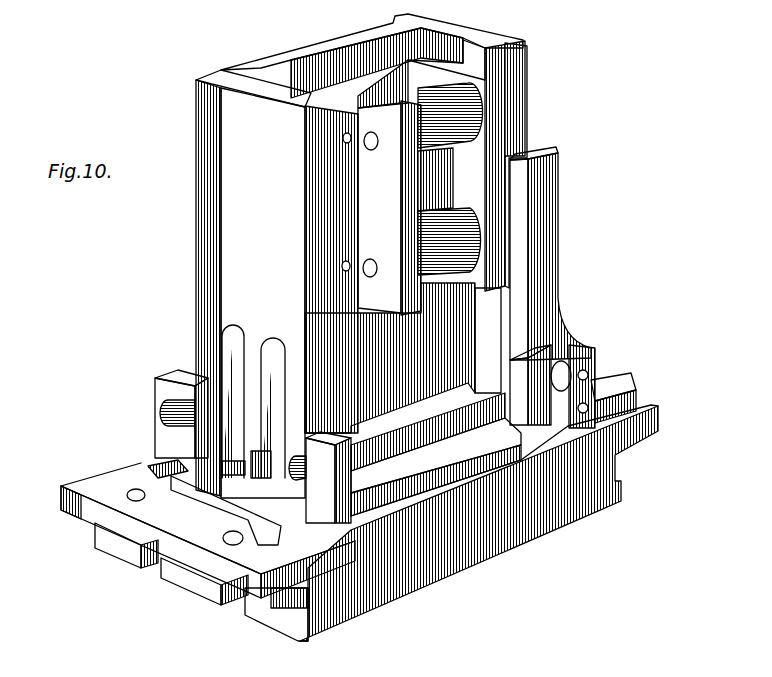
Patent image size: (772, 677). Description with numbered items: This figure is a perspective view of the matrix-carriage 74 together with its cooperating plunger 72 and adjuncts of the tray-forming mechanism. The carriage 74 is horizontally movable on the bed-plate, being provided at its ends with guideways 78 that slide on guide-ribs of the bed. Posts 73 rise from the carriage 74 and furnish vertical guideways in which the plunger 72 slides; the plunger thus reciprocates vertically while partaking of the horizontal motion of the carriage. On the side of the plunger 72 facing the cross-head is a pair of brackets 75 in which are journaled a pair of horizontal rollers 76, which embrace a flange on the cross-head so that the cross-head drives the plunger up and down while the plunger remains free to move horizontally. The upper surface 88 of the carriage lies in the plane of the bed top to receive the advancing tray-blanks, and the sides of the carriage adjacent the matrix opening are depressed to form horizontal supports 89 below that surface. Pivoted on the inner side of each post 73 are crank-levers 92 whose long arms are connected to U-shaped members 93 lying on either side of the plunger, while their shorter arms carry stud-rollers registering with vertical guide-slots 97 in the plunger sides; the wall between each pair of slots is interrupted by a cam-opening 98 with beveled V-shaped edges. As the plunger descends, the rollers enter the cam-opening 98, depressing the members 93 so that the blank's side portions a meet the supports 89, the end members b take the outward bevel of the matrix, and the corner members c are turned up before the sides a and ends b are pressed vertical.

The plunger 72 is at (205, 222).
The posts 73 is at (534, 247).
The matrix-carriage 74 is at (370, 580).
The brackets 75 is at (469, 87).
The horizontal rollers 76 is at (463, 110).
The guideways 78 is at (297, 590).
The upper surface of the carriage 88 is at (100, 483).
The horizontal supports 89 is at (417, 523).
The crank-levers 92 is at (555, 360).
The U-shaped members 93 is at (177, 377).
The vertical guide-slots 97 is at (265, 352).
The cam-opening 98 is at (247, 440).
The side portions of the blank a is at (510, 477).
The end members of the blank b is at (213, 487).
The corner members of the blank c is at (150, 460).